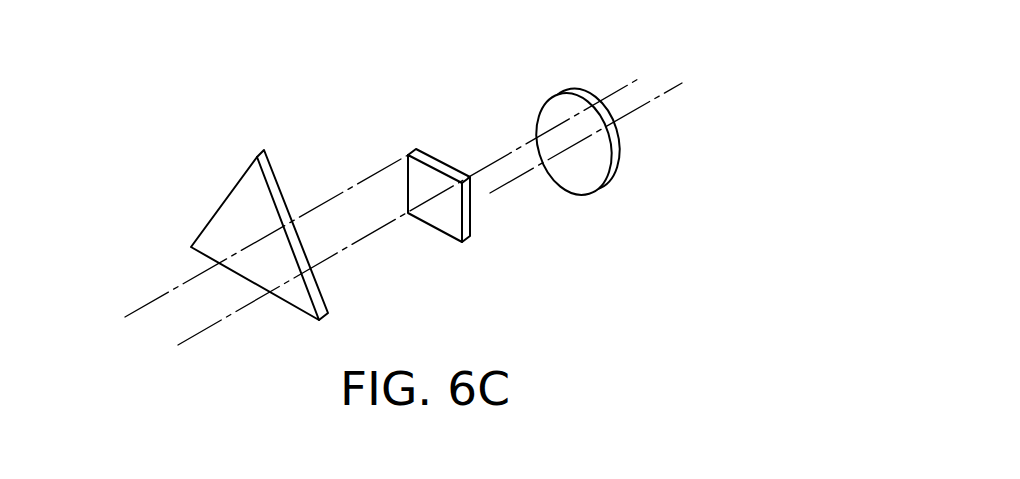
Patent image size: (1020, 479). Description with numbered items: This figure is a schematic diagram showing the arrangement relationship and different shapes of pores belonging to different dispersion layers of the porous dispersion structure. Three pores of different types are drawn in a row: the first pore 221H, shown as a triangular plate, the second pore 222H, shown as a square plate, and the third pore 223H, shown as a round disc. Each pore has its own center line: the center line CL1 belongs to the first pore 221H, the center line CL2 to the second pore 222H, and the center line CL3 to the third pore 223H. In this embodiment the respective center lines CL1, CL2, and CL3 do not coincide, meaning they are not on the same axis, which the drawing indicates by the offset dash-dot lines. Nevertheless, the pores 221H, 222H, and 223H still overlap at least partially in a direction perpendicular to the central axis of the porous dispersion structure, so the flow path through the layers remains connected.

The first pore 221H is at (260, 155).
The second pore 222H is at (414, 149).
The third pore 223H is at (562, 92).
The center line of the first pore CL1 is at (239, 250).
The center line of the second pore CL2 is at (381, 227).
The center line of the third pore CL3 is at (612, 125).